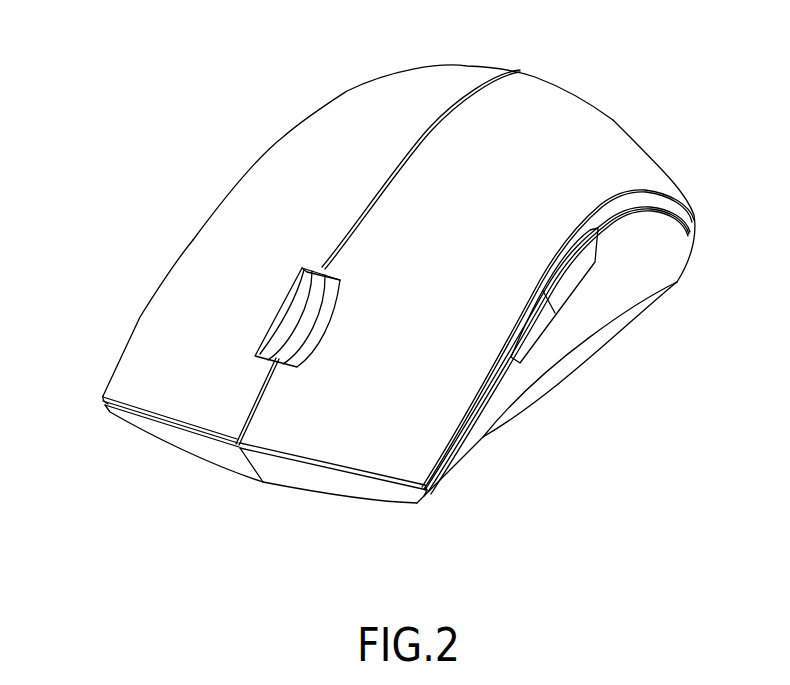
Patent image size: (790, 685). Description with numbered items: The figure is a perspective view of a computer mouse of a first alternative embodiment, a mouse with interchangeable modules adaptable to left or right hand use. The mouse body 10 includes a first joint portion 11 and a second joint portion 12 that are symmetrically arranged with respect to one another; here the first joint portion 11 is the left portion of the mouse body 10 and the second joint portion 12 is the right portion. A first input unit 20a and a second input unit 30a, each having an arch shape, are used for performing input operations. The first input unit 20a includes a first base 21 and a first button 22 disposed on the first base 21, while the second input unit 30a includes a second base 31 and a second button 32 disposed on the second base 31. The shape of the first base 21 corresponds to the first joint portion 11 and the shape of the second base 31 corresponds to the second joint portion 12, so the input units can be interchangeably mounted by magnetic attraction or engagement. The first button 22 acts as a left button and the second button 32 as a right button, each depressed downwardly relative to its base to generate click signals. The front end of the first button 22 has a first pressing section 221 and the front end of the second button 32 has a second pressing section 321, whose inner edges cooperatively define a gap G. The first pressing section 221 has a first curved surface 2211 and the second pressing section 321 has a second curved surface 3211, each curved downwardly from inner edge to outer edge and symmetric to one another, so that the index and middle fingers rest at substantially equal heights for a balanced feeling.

The mouse body 10 is at (608, 350).
The first joint portion 11 is at (292, 473).
The second joint portion 12 is at (190, 445).
The first input unit 20a is at (603, 103).
The first base 21 is at (325, 463).
The first button 22 is at (538, 117).
The first pressing section 221 is at (440, 405).
The first curved surface 2211 is at (367, 447).
The second input unit 30a is at (345, 86).
The second base 31 is at (167, 422).
The second button 32 is at (402, 100).
The second pressing section 321 is at (173, 325).
The second curved surface 3211 is at (140, 393).
The gap G is at (254, 406).